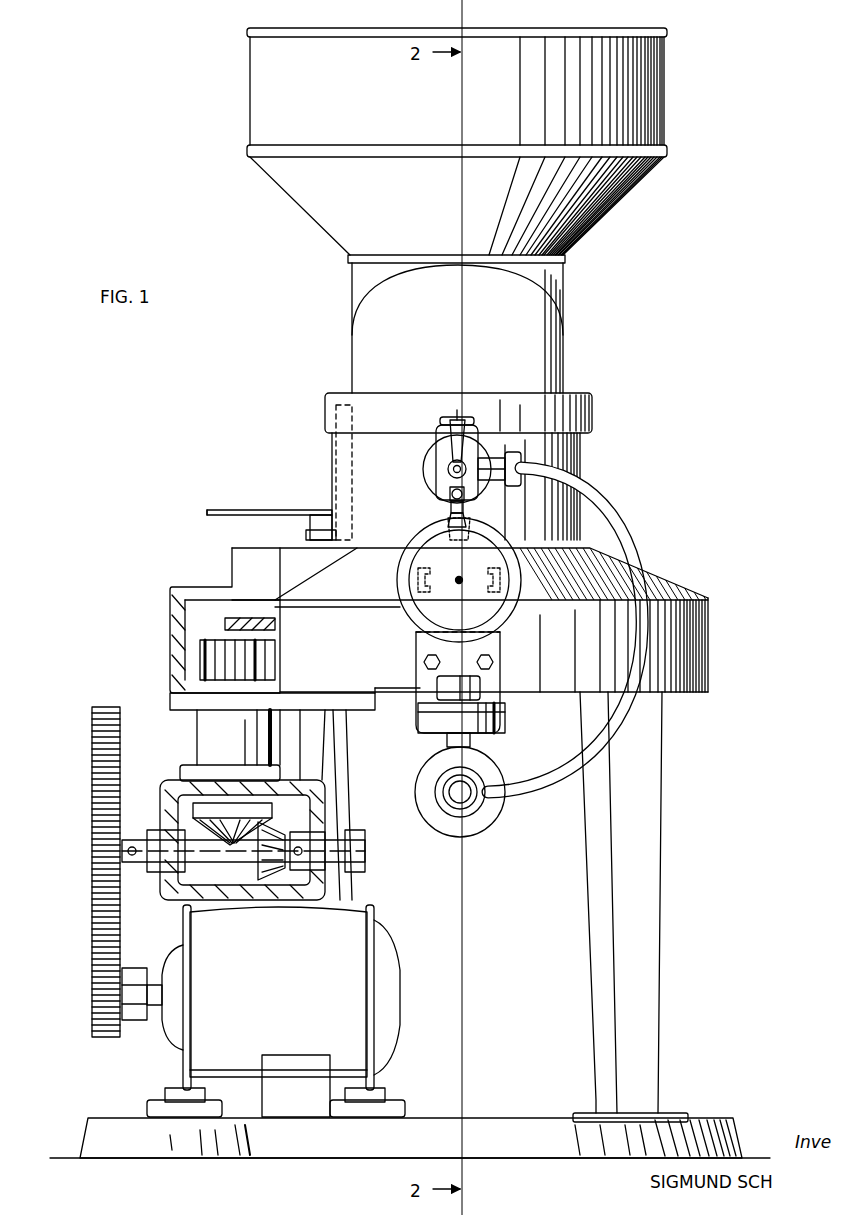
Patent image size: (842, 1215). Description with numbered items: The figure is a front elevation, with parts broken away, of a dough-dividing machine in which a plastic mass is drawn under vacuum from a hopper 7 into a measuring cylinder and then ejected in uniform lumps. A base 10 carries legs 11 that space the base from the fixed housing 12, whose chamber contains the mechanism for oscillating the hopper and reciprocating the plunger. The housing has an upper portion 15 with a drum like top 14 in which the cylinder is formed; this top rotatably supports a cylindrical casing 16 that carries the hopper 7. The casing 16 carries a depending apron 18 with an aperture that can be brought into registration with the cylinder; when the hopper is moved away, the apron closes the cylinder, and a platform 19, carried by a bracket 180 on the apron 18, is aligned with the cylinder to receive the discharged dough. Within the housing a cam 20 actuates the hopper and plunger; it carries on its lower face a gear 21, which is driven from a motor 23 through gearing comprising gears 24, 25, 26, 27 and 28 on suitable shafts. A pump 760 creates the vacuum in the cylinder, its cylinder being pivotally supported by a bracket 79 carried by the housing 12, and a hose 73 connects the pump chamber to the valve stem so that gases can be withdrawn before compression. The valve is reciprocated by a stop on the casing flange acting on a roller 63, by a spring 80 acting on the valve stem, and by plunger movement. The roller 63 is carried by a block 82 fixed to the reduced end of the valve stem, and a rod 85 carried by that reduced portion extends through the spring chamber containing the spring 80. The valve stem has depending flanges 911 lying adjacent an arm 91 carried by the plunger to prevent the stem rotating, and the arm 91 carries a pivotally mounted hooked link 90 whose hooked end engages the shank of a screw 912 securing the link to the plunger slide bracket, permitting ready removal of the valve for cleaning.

The hopper 7 is at (278, 110).
The base 10 is at (706, 1124).
The legs 11 is at (337, 805).
The housing 12 is at (712, 632).
The drum like top 14 is at (582, 452).
The upper portion 15 is at (700, 592).
The cylindrical casing 16 is at (585, 396).
The apron 18 is at (269, 499).
The platform 19 is at (213, 506).
The cam 20 is at (183, 613).
The gear 21 is at (245, 700).
The motor 23 is at (330, 985).
The gear 24 is at (198, 660).
The gear 25 is at (160, 815).
The gear 26 is at (168, 900).
The gear 27 is at (92, 878).
The gear 28 is at (96, 1022).
The roller 63 is at (447, 428).
The hose 73 is at (607, 735).
The bracket 79 is at (502, 716).
The spring 80 is at (318, 536).
The block 82 is at (438, 441).
The rod 85 is at (446, 469).
The hooked link 90 is at (521, 534).
The arm 91 is at (572, 504).
The bracket 180 is at (308, 517).
The pump 760 is at (480, 838).
The depending flanges 911 is at (444, 489).
The screw 912 is at (448, 512).